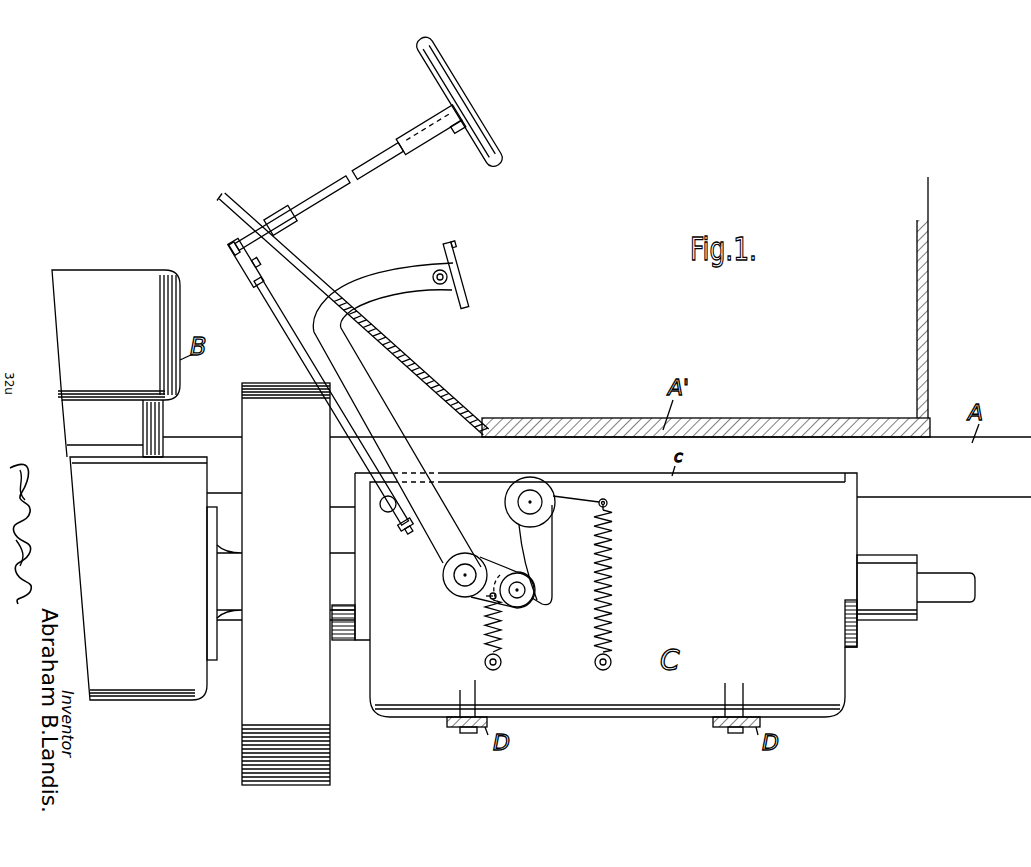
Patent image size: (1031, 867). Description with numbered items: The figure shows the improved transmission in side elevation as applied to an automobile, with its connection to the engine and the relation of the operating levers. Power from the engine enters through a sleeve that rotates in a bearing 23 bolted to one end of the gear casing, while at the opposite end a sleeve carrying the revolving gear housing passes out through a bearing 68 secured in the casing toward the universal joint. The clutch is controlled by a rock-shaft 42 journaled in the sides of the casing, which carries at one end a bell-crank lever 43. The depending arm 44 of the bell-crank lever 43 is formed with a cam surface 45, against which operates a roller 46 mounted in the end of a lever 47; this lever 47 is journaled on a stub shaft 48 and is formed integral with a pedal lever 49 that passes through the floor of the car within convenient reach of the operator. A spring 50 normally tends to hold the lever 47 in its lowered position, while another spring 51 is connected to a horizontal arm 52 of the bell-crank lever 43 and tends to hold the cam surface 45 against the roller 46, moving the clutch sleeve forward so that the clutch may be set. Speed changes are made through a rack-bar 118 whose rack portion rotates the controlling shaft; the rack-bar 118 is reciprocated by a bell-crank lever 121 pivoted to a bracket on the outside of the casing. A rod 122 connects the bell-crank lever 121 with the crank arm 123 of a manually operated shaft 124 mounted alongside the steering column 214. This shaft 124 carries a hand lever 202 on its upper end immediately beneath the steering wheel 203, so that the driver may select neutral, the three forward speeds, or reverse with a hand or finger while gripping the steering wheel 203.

The steering column 214 is at (410, 128).
The hand lever 202 is at (461, 140).
The steering wheel 203 is at (503, 153).
The operating shaft 124 is at (310, 212).
The crank arm 123 is at (246, 262).
The rod 122 is at (352, 438).
The pedal lever 49 is at (417, 463).
The rack-bar 118 is at (380, 505).
The bell-crank lever 121 is at (402, 528).
The bearing 23 is at (368, 618).
The stub shaft 48 is at (460, 580).
The lever 47 is at (485, 600).
The roller 46 is at (528, 605).
The cam surface 45 is at (522, 567).
The depending arm 44 is at (546, 556).
The bell-crank lever 43 is at (545, 524).
The rock-shaft 42 is at (518, 503).
The horizontal arm 52 is at (608, 500).
The spring 51 is at (613, 593).
The spring 50 is at (500, 640).
The bearing 68 is at (870, 605).